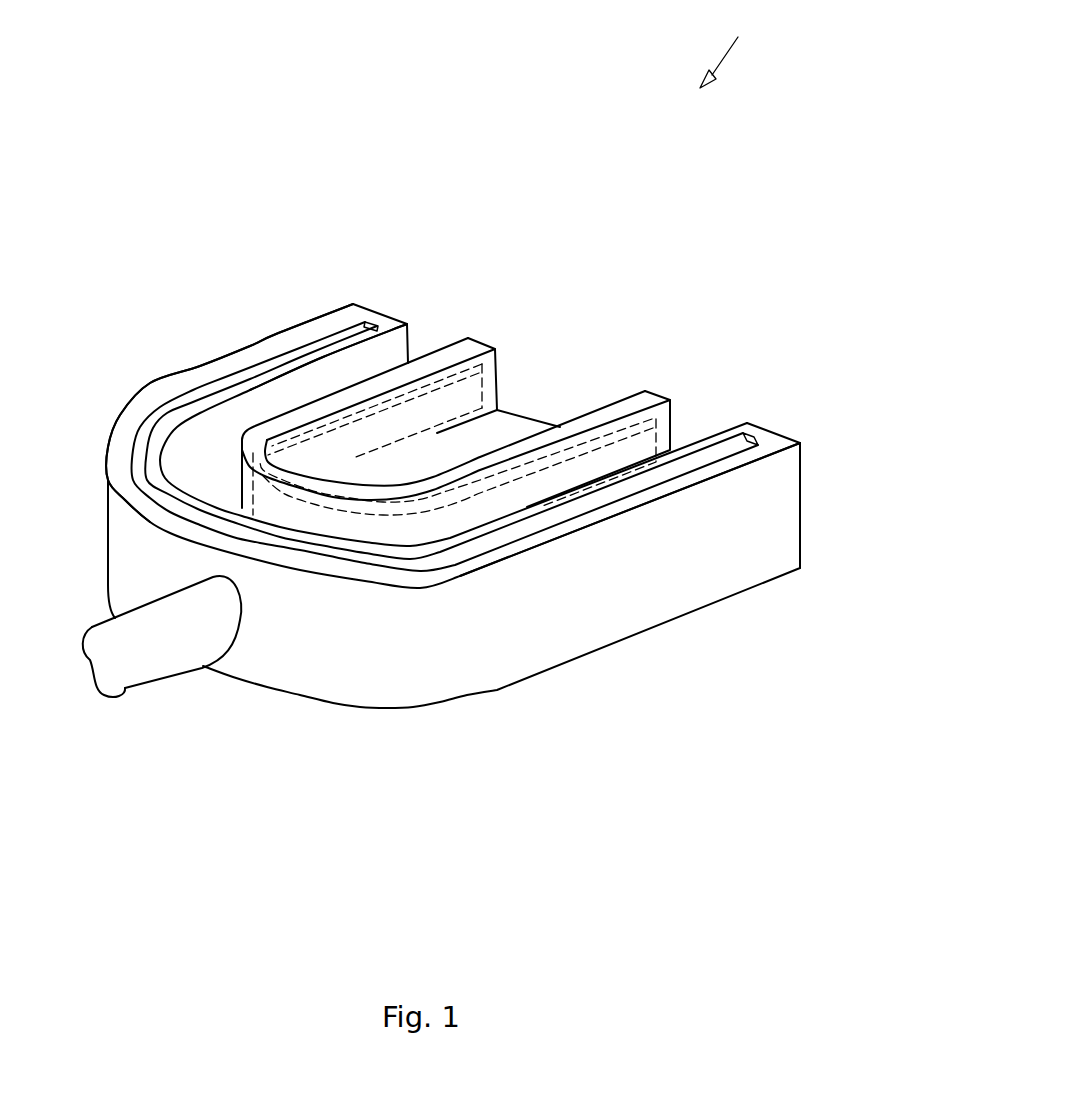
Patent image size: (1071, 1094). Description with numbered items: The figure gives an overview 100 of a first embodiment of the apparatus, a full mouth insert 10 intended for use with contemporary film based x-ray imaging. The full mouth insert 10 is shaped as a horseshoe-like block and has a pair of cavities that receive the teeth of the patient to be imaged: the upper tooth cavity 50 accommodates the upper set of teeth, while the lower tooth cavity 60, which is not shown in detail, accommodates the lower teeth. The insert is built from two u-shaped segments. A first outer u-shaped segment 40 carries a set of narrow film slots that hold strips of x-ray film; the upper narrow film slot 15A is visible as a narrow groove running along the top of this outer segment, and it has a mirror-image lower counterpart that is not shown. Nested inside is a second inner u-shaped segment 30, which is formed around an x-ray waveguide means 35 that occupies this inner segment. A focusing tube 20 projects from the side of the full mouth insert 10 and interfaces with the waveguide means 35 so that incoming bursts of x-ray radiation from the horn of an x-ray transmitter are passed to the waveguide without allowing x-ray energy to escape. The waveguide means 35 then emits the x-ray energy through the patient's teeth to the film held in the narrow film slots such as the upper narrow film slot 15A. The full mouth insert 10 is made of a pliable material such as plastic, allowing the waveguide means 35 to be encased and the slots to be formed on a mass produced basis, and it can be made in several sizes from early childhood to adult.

The overview 100 is at (733, 49).
The full mouth insert 10 is at (497, 653).
The upper narrow film slot 15A is at (208, 390).
The focusing tube 20 is at (178, 635).
The second inner u-shaped segment 30 is at (477, 343).
The x-ray waveguide means 35 is at (643, 444).
The first outer u-shaped segment 40 is at (288, 340).
The upper tooth cavity 50 is at (425, 343).
The lower tooth cavity 60 is at (677, 583).